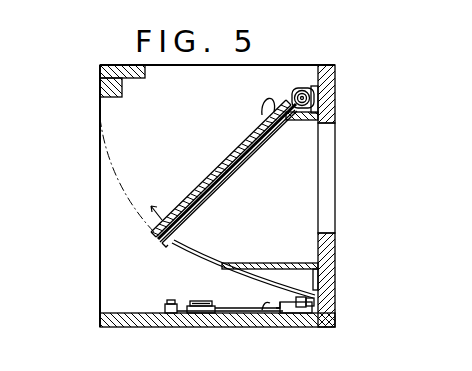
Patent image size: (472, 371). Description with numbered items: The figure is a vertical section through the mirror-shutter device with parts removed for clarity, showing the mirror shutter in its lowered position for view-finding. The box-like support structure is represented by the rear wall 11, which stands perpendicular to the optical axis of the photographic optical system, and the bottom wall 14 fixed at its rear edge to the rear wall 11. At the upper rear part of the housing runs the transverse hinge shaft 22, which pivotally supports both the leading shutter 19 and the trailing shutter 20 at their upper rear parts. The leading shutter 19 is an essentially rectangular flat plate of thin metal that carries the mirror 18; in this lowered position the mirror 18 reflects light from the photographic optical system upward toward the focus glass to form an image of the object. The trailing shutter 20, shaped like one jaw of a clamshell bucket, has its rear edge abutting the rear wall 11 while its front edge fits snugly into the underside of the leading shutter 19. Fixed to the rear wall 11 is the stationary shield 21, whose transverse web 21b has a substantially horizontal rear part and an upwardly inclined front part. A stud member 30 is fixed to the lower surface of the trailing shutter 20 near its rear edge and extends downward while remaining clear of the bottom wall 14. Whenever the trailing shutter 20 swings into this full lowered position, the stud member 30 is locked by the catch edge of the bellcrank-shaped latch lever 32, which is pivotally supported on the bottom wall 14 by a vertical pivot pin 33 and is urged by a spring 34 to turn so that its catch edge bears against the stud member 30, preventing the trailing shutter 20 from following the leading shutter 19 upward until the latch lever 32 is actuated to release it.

The rear wall 11 is at (335, 118).
The bottom wall 14 is at (129, 327).
The mirror 18 is at (227, 162).
The leading shutter 19 is at (262, 113).
The trailing shutter 20 is at (236, 283).
The stationary shield 21 is at (277, 263).
The transverse web 21b is at (235, 263).
The transverse hinge shaft 22 is at (314, 91).
The stud member 30 is at (280, 307).
The latch lever 32 is at (276, 306).
The vertical pivot pin 33 is at (200, 303).
The spring 34 is at (187, 313).